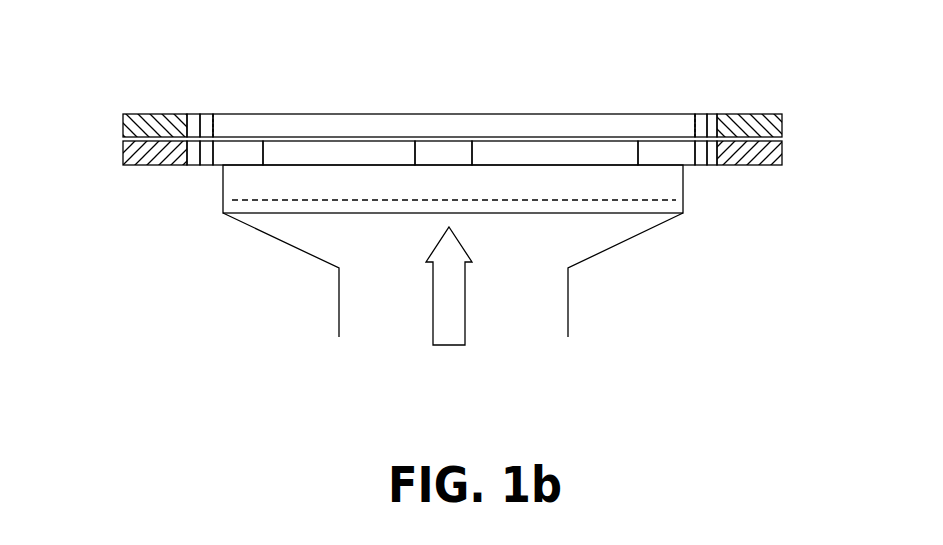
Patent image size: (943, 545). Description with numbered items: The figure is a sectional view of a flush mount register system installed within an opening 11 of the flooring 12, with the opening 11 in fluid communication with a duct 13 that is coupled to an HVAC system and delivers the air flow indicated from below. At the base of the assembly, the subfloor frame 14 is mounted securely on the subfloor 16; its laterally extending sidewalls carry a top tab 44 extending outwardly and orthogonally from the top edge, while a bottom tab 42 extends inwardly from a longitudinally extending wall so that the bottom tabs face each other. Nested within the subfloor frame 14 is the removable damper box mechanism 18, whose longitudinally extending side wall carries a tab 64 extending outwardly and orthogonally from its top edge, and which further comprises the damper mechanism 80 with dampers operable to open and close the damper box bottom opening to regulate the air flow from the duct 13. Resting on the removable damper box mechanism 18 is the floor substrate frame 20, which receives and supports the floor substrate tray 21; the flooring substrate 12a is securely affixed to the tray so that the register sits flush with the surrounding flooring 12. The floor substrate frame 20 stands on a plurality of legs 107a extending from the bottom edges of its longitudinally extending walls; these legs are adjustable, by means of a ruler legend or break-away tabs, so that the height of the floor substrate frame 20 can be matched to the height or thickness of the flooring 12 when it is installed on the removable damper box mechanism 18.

The flooring 12 is at (140, 114).
The flooring substrate 12a is at (355, 125).
The floor substrate frame 20 is at (193, 133).
The tab 64 is at (216, 120).
The floor substrate tray 21 is at (697, 128).
The subfloor frame 14 is at (717, 147).
The leg 107a is at (250, 152).
The subfloor 16 is at (140, 158).
The top tab 44 is at (157, 150).
The opening 11 is at (193, 150).
The bottom tab 42 is at (207, 152).
The damper mechanism 80 is at (273, 213).
The duct 13 is at (568, 295).
The removable damper box mechanism 18 is at (691, 182).